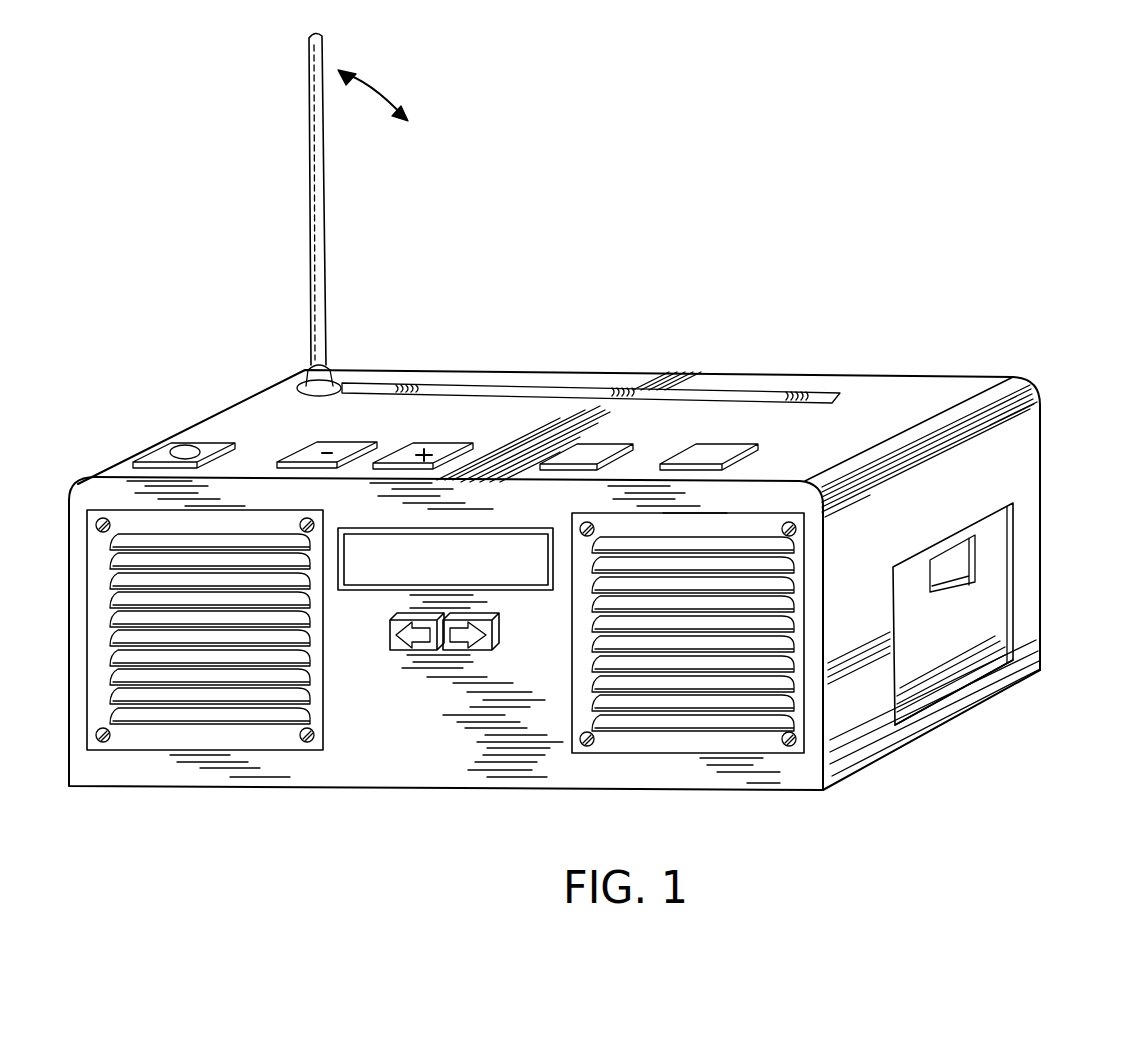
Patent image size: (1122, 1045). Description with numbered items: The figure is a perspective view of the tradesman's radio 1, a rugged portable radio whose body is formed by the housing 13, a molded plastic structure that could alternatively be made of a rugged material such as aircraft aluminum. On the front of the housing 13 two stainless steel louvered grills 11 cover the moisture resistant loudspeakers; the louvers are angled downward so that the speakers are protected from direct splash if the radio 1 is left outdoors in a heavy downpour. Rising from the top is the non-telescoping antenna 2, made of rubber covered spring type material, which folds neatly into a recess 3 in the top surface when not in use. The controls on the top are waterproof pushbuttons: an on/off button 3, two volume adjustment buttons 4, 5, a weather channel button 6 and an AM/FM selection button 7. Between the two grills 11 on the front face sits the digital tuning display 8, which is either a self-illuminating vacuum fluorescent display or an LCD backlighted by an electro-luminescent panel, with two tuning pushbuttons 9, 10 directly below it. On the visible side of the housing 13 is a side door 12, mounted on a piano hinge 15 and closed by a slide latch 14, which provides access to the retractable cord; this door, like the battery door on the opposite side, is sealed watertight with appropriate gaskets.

The tradesman's radio 1 is at (798, 334).
The non-telescoping antenna 2 is at (320, 160).
The on/off pushbutton 3 is at (157, 453).
The volume adjustment pushbutton 4 is at (310, 447).
The volume adjustment pushbutton 5 is at (452, 442).
The weather channel pushbutton 6 is at (610, 450).
The AM/FM selection pushbutton 7 is at (695, 458).
The digital tuning display 8 is at (375, 570).
The tuning pushbutton 9 is at (402, 650).
The tuning pushbutton 10 is at (485, 650).
The louvered grills 11 is at (183, 733).
The side door 12 is at (998, 616).
The housing 13 is at (1007, 458).
The slide latch 14 is at (1003, 527).
The piano hinge 15 is at (970, 690).